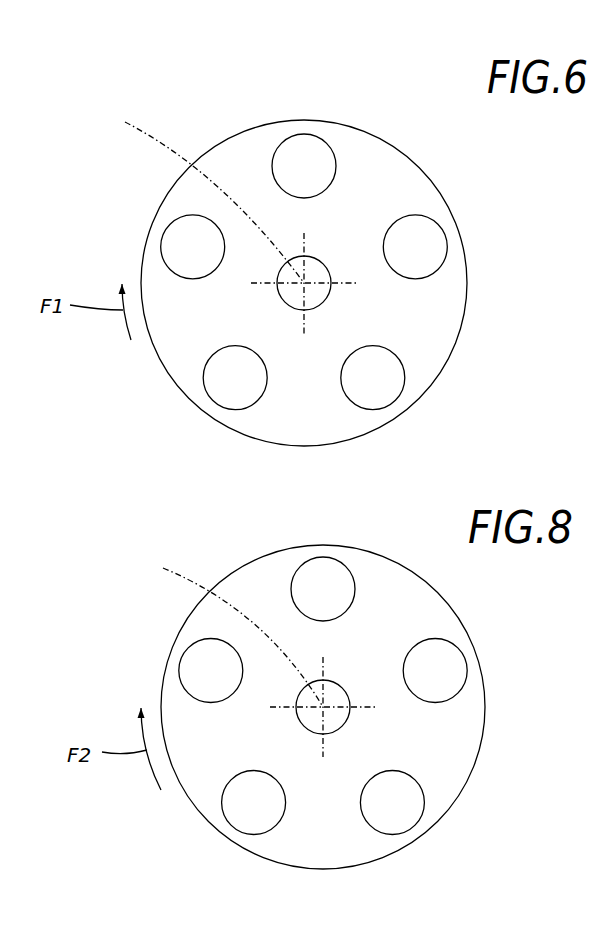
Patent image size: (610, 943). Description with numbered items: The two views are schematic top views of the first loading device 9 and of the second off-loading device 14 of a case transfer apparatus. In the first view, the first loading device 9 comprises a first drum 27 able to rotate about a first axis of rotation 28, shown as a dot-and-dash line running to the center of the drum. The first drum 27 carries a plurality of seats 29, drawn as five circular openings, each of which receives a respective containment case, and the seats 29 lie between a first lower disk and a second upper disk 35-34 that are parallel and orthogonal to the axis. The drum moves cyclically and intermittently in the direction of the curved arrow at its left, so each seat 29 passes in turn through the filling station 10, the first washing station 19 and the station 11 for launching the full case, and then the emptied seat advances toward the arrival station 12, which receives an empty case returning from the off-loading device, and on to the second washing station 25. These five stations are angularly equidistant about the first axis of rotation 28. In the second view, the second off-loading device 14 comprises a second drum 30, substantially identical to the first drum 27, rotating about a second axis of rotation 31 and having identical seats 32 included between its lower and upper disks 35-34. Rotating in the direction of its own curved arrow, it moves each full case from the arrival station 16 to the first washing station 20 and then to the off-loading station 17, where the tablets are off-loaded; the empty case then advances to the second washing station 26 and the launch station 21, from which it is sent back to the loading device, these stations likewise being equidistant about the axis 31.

In FIG. 6, the first loading device 9 is at (377, 131).
In FIG. 6, the first drum 27 is at (475, 313).
In FIG. 6, the second upper disk and first lower disk 35-34 is at (432, 180).
In FIG. 8, the second upper disk and first lower disk 35-34 is at (323, 544).
In FIG. 6, the first axis of rotation 28 is at (198, 192).
In FIG. 6, the first washing station 19 is at (304, 133).
In FIG. 6, the filling station 10 is at (161, 246).
In FIG. 6, the station for launching 11 is at (444, 231).
In FIG. 6, the station for the arrival of the case 12 is at (405, 383).
In FIG. 6, the second washing station 25 is at (205, 389).
In FIG. 6, the seats 29 is at (275, 152).
In FIG. 8, the second drum 30 is at (401, 556).
In FIG. 8, the second off-loading device 14 is at (448, 598).
In FIG. 8, the second axis of rotation 31 is at (227, 632).
In FIG. 8, the first station for externally washing the empty case 20 is at (295, 573).
In FIG. 8, the station for the arrival of the full case 16 is at (179, 670).
In FIG. 8, the off-loading station 17 is at (461, 651).
In FIG. 8, the launch station 21 is at (234, 828).
In FIG. 8, the second washing station 26 is at (424, 807).
In FIG. 8, the seats 32 is at (292, 594).